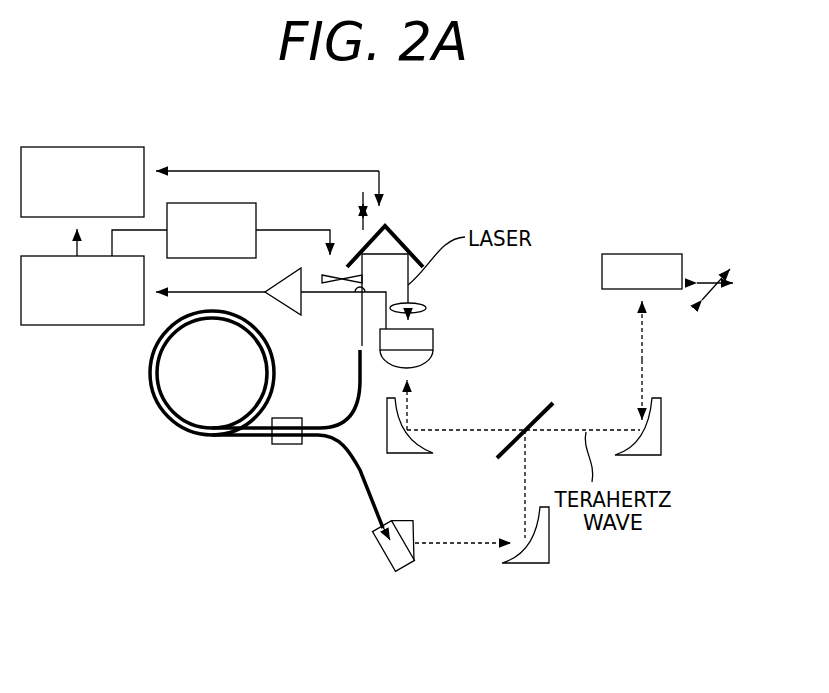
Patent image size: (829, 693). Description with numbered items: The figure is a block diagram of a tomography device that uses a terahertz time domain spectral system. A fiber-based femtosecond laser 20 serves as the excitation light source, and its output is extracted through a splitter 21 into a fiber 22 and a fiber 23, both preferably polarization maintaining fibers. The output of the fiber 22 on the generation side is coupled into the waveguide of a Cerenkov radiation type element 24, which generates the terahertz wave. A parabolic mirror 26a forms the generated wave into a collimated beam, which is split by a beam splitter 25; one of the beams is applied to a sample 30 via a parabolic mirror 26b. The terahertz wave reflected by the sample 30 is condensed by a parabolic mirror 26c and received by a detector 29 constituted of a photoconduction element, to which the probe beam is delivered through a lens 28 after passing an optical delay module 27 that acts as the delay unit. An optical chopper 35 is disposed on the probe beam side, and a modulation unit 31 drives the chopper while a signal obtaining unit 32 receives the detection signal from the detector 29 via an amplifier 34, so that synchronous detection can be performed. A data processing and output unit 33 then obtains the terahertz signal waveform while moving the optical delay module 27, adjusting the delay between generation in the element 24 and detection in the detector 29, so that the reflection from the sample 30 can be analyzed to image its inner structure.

The femtosecond laser 20 is at (180, 432).
The splitter 21 is at (290, 445).
The fiber 22 is at (373, 490).
The fiber 23 is at (357, 378).
The Cerenkov radiation type element 24 is at (401, 564).
The beam splitter 25 is at (525, 428).
The parabolic mirror 26a is at (526, 565).
The parabolic mirror 26b is at (658, 438).
The parabolic mirror 26c is at (387, 443).
The optical delay module 27 is at (393, 233).
The lens 28 is at (426, 308).
The detector 29 is at (433, 340).
The sample 30 is at (643, 255).
The modulation unit 31 is at (250, 203).
The signal obtaining unit 32 is at (41, 326).
The data processing and output unit 33 is at (107, 146).
The amplifier 34 is at (290, 306).
The optical chopper 35 is at (340, 274).